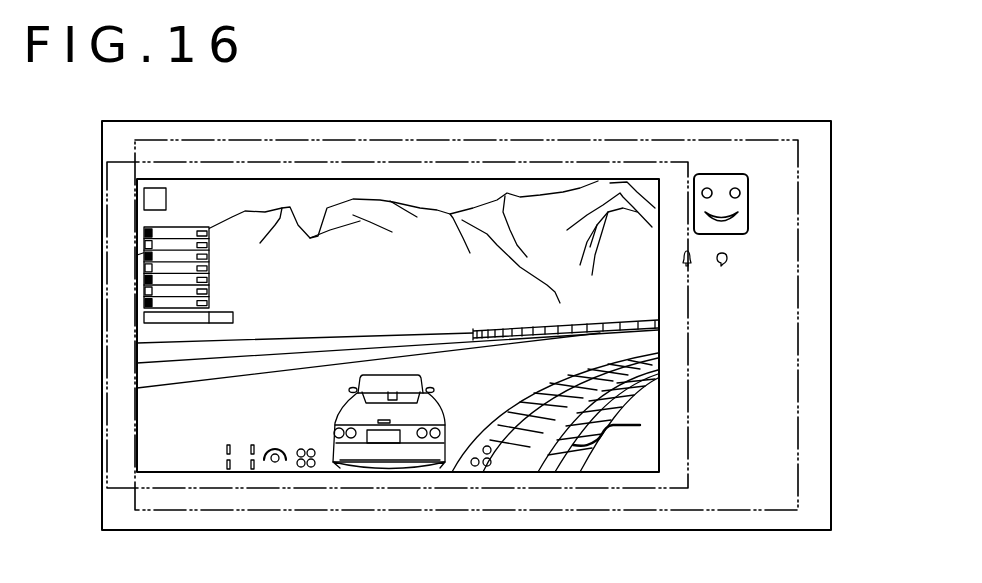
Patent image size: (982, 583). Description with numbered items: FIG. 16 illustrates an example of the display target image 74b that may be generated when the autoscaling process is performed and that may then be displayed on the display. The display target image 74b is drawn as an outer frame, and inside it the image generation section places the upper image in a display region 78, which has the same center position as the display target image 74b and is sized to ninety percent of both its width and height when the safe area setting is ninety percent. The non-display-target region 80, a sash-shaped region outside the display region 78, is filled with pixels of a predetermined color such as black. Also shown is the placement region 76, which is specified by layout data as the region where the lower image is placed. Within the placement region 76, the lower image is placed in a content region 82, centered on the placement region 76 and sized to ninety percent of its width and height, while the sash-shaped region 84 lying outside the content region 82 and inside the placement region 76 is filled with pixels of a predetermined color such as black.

The display target image 74b is at (738, 121).
The placement region 76 is at (543, 162).
The display region 78 is at (646, 140).
The non-display-target region 80 is at (820, 232).
The content region 82 is at (352, 277).
The sash-shaped region 84 is at (124, 311).